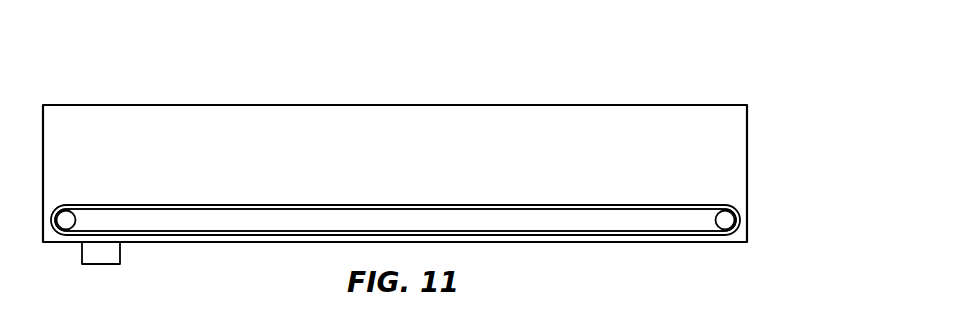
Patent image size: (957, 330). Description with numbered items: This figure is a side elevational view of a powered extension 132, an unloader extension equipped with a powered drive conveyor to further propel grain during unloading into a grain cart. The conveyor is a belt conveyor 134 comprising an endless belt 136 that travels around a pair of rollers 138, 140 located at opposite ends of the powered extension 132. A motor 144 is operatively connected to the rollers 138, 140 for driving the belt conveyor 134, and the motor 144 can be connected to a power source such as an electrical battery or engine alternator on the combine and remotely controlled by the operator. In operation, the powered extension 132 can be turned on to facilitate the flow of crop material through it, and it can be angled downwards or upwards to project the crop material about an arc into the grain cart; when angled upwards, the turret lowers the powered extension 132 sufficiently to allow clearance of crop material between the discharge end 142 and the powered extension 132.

The powered extension 132 is at (587, 81).
The belt conveyor 134 is at (65, 204).
The endless belt 136 is at (279, 205).
The roller 138 is at (66, 222).
The roller 140 is at (725, 222).
The discharge end 142 is at (762, 158).
The motor 144 is at (120, 255).